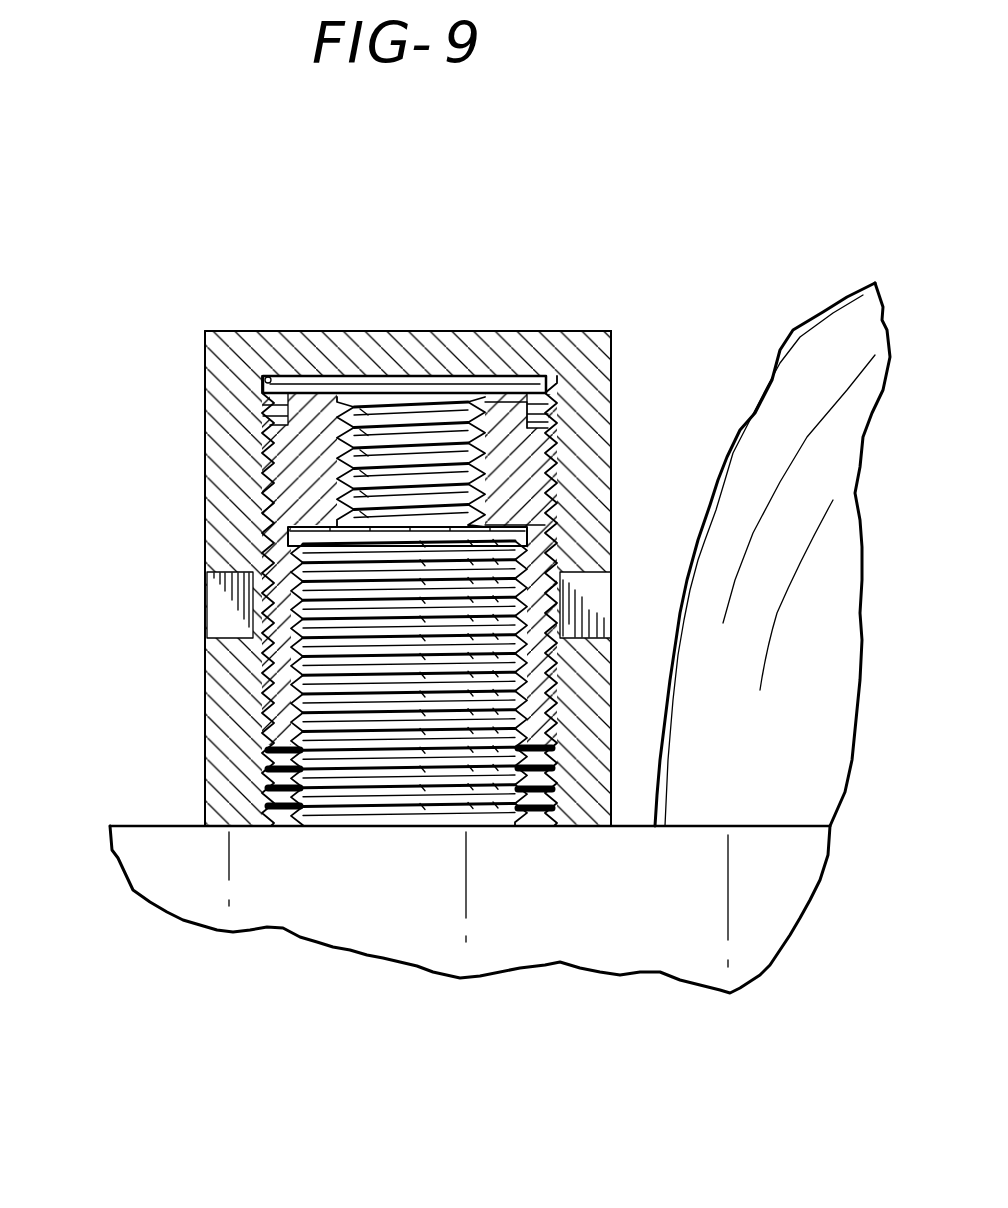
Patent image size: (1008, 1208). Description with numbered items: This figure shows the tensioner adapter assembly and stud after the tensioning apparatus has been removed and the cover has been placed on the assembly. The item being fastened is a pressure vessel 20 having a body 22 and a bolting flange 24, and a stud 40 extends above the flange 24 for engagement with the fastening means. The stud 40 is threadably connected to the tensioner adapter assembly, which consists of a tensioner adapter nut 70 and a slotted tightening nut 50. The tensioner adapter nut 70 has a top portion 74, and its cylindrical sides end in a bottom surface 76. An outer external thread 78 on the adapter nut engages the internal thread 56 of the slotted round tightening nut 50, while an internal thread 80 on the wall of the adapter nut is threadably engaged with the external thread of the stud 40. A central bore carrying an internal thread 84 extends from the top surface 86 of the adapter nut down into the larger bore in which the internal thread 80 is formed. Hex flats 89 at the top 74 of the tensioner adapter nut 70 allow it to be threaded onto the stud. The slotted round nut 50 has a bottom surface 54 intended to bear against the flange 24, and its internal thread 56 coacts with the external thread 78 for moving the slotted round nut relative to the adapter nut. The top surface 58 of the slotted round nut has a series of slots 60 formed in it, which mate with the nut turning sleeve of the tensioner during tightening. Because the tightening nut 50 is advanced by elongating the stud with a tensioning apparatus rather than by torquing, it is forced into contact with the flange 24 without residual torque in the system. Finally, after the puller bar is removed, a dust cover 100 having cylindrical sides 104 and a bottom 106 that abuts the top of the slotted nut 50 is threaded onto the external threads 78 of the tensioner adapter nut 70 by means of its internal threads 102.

The pressure vessel 20 is at (784, 334).
The body 22 is at (823, 312).
The bolting flange 24 is at (143, 826).
The stud 40 is at (418, 772).
The slotted tightening nut 50 is at (198, 682).
The bottom surface 54 is at (224, 830).
The internal thread 56 is at (300, 733).
The top surface 58 is at (228, 568).
The slots 60 is at (210, 611).
The tensioner adapter nut 70 is at (258, 460).
The top portion 74 is at (513, 410).
The bottom surface 76 is at (528, 750).
The outer external thread 78 is at (600, 498).
The internal thread 80 is at (306, 730).
The internal thread 84 is at (430, 428).
The top surface 86 is at (318, 390).
The hex flats 89 is at (548, 415).
The dust cover 100 is at (212, 316).
The internal threads 102 is at (280, 372).
The cylindrical sides 104 is at (612, 348).
The bottom 106 is at (613, 589).